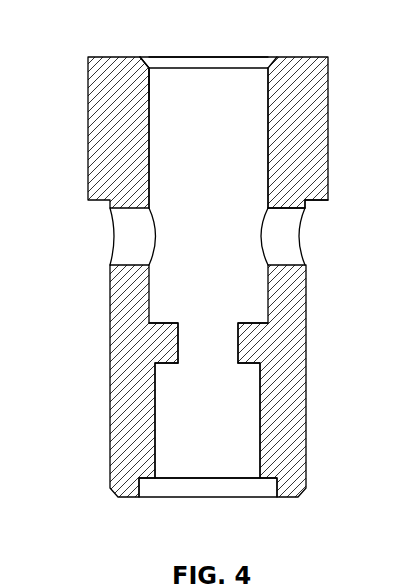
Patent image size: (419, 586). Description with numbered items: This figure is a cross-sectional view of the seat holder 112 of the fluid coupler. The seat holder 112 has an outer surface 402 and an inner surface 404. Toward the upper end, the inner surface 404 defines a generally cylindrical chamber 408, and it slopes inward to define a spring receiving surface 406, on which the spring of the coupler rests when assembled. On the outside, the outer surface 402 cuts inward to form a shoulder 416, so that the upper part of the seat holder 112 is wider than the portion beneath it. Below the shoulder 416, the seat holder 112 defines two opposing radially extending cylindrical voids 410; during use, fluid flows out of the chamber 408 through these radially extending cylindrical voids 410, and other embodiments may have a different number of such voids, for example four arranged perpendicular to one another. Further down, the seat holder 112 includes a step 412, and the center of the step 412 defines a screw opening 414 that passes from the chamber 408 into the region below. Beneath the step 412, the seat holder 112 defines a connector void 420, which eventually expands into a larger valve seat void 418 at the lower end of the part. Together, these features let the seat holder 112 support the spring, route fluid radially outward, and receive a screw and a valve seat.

The seat holder 112 is at (87, 213).
The outer surface 402 is at (328, 87).
The inner surface 404 is at (175, 63).
The spring receiving surface 406 is at (157, 87).
The chamber 408 is at (258, 91).
The radially extending cylindrical voids 410 is at (290, 240).
The step 412 is at (152, 347).
The screw opening 414 is at (220, 352).
The shoulder 416 is at (316, 202).
The valve seat void 418 is at (240, 486).
The connector void 420 is at (192, 460).